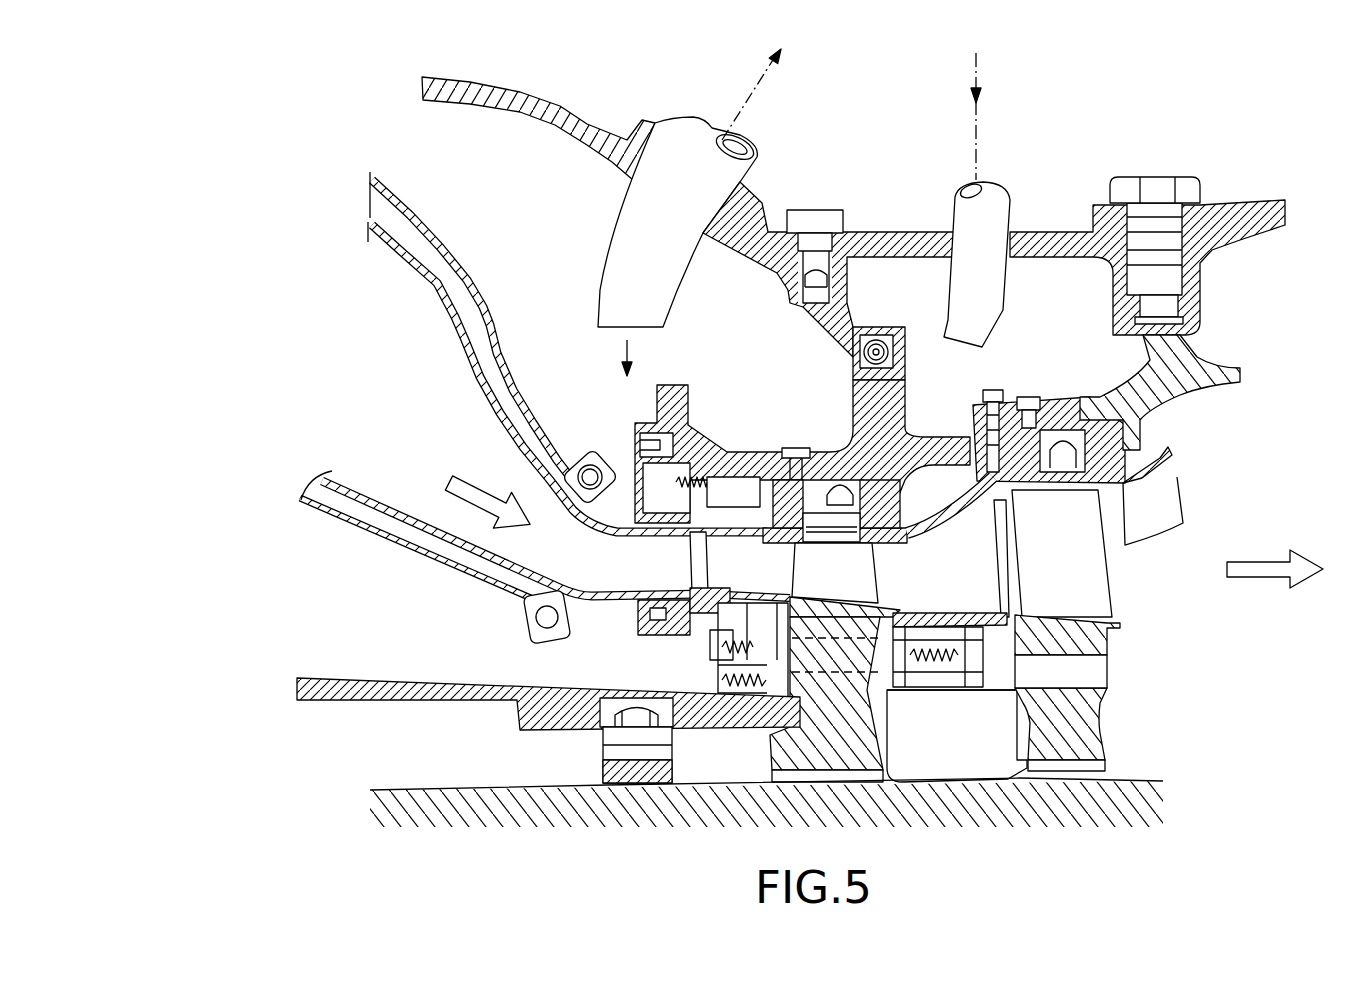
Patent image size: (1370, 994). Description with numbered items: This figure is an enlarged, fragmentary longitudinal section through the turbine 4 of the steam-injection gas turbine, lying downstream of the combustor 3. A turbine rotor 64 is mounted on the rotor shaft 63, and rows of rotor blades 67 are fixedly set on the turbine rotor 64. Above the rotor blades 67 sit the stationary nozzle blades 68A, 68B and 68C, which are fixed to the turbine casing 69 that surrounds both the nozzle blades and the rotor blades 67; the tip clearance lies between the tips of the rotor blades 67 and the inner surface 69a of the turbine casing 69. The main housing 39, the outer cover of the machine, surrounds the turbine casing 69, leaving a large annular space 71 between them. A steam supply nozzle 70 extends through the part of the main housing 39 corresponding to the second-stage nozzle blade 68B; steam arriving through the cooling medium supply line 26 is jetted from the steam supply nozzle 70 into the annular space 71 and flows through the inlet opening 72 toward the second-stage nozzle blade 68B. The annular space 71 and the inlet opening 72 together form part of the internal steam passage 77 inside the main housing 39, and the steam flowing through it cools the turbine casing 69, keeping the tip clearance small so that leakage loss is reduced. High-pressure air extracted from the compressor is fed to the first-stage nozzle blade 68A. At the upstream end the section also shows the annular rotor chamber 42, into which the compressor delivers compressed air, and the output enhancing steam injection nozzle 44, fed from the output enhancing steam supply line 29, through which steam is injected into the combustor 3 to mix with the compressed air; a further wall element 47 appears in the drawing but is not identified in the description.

The combustor 3 is at (410, 144).
The turbine 4 is at (1059, 285).
The cooling medium supply line 26 is at (978, 62).
The output enhancing steam supply line 29 is at (763, 80).
The main housing 39 is at (895, 240).
The annular rotor chamber 42 is at (462, 130).
The output enhancing steam injection nozzle 44 is at (670, 185).
The inner duct wall 47 is at (370, 453).
The rotor shaft 63 is at (493, 783).
The turbine rotor 64 is at (883, 693).
The rotor blades 67 is at (863, 573).
The first-stage nozzle blade 68A is at (720, 567).
The second-stage nozzle blade 68B is at (993, 548).
The nozzle blade 68C is at (1170, 507).
The turbine casing 69 is at (733, 452).
The inner surface of the turbine casing 69a is at (837, 543).
The steam supply nozzle 70 is at (1002, 210).
The annular space 71 is at (1103, 370).
The inlet opening 72 is at (930, 480).
The internal steam passage 77 is at (1102, 313).